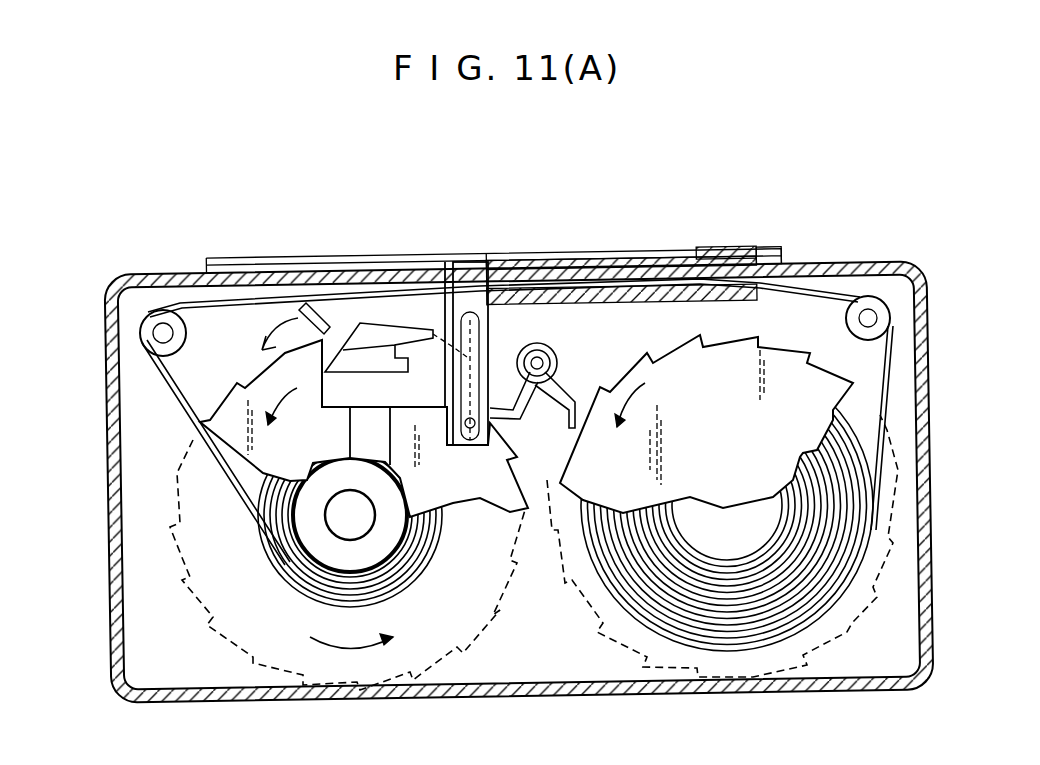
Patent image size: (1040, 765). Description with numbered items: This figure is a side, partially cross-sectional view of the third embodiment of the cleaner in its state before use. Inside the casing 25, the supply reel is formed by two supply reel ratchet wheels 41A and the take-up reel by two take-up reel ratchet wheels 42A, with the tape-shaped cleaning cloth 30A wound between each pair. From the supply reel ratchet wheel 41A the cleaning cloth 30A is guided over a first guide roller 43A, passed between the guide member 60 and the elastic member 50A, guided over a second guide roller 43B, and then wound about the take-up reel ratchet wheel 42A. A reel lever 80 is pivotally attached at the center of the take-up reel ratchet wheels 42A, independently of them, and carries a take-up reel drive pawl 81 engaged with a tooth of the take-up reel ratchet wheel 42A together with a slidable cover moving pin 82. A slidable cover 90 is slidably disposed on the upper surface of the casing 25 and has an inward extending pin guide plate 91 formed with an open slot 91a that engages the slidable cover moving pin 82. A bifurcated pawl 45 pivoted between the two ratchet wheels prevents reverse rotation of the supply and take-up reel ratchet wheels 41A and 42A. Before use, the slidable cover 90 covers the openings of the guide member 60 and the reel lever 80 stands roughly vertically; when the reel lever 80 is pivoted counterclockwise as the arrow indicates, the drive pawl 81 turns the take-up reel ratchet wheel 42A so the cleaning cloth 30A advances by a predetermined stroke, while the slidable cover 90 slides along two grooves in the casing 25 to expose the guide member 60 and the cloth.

The casing 25 is at (930, 603).
The tape-shaped cleaning cloth 30A is at (880, 468).
The supply reel ratchet wheels 41A is at (885, 395).
The take-up reel ratchet wheels 42A is at (233, 412).
The first guide roller 43A is at (868, 308).
The second guide roller 43B is at (160, 322).
The bifurcated pawl 45 is at (567, 395).
The elastic member 50A is at (723, 284).
The guide member 60 is at (560, 272).
The reel lever 80 is at (323, 330).
The take-up reel drive pawl 81 is at (400, 345).
The slidable cover moving pin 82 is at (473, 430).
The slidable cover 90 is at (531, 266).
The pin guide plate 91 is at (477, 303).
The open slot 91a is at (463, 313).